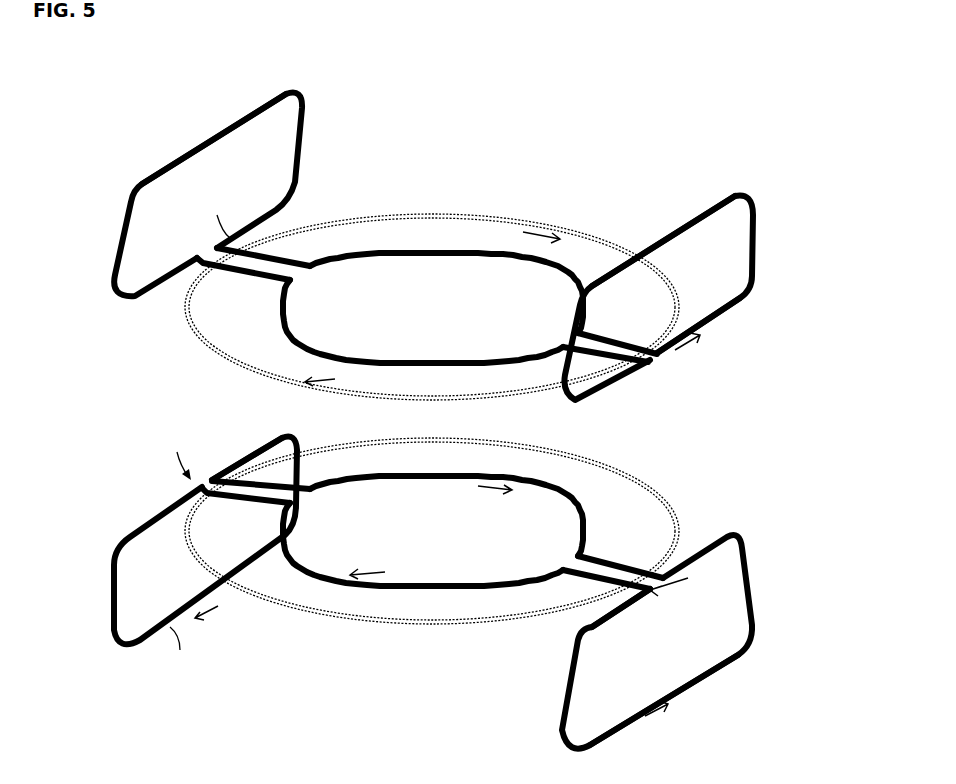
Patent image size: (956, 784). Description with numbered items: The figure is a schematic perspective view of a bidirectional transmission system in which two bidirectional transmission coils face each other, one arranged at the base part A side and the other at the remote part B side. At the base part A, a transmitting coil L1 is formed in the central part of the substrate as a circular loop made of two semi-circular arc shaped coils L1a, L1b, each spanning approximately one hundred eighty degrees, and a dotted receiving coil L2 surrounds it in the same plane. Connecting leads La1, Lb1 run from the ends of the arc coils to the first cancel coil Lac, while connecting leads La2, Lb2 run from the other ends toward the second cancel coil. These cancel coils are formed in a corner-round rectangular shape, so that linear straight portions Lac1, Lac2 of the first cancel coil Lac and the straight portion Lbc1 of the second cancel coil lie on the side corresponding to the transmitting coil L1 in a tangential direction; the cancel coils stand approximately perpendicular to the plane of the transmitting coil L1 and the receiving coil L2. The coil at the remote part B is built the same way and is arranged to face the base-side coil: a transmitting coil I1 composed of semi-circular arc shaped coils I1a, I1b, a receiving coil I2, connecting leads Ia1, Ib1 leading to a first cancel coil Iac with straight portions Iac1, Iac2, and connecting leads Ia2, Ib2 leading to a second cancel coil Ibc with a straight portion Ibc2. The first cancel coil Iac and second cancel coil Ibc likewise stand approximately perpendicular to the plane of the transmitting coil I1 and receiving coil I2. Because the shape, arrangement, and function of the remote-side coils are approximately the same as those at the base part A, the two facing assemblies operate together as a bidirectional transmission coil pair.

The remote part B is at (523, 79).
The base part A is at (365, 749).
The transmitting coil I1 is at (430, 291).
The receiving coil I2 is at (485, 210).
The semi-circular arc shaped coil I1a is at (393, 256).
The semi-circular arc shaped coil I1b is at (457, 358).
The connecting lead Ia1 is at (613, 347).
The connecting lead Ia2 is at (283, 262).
The connecting lead Ib1 is at (558, 347).
The connecting lead Ib2 is at (260, 277).
The second cancel coil Ibc is at (164, 183).
The straight portion Ibc2 is at (167, 167).
The first cancel coil Iac is at (706, 292).
The straight portion Iac1 is at (703, 327).
The straight portion Iac2 is at (693, 213).
The transmitting coil L1 is at (518, 533).
The receiving coil L2 is at (378, 625).
The semi-circular arc shaped coil L1a is at (387, 481).
The semi-circular arc shaped coil L1b is at (447, 580).
The connecting lead La1 is at (620, 567).
The connecting lead La2 is at (290, 487).
The connecting lead Lb1 is at (550, 573).
The connecting lead Lb2 is at (240, 503).
The straight portion Lbc1 is at (160, 515).
The first cancel coil Lac is at (680, 649).
The straight portion Lac1 is at (623, 593).
The straight portion Lac2 is at (697, 677).